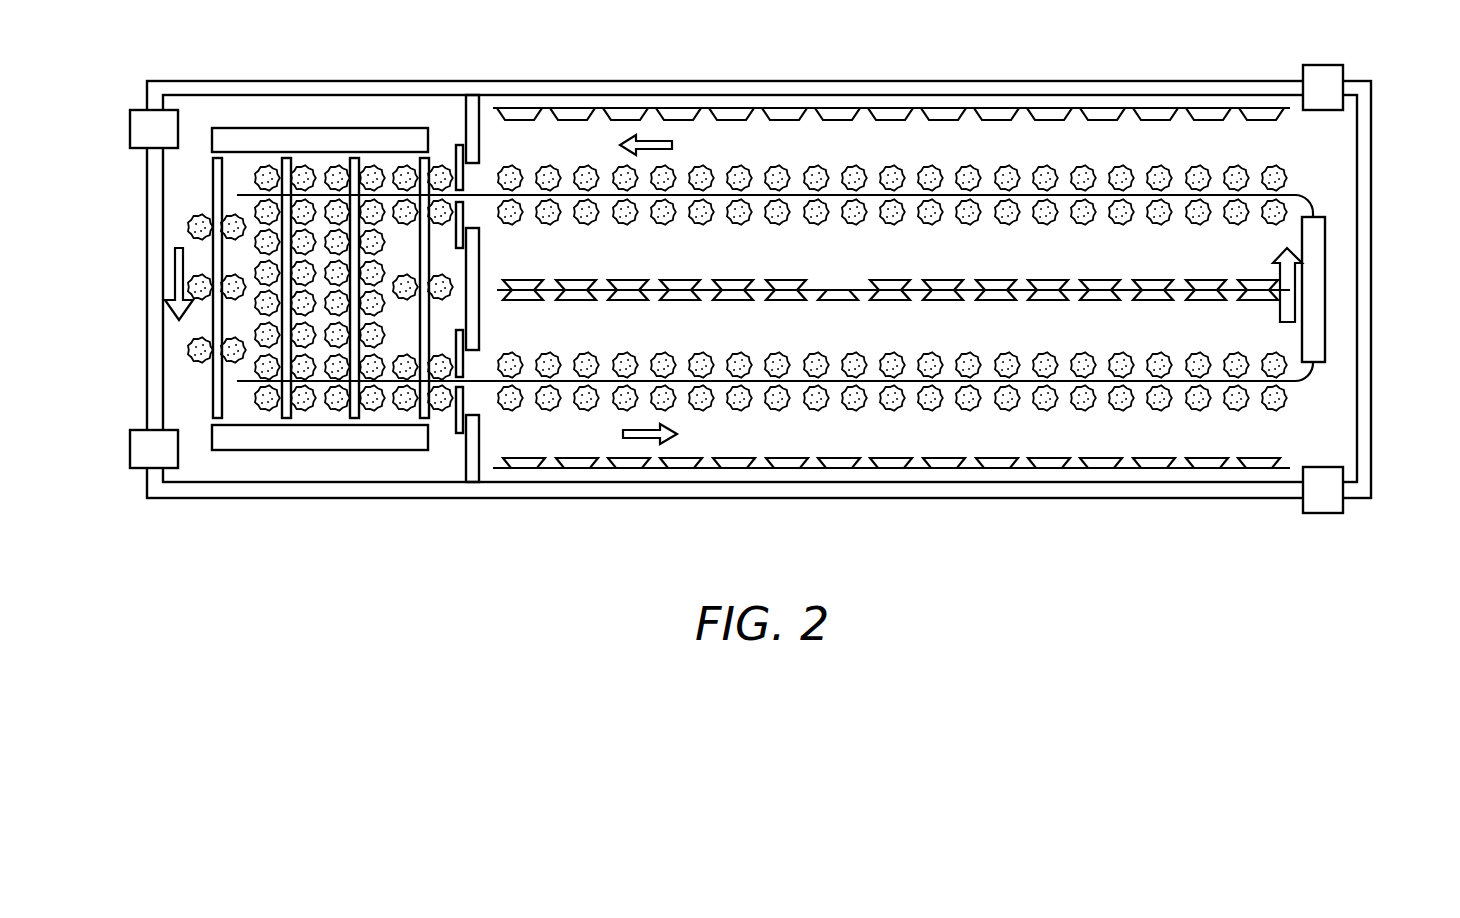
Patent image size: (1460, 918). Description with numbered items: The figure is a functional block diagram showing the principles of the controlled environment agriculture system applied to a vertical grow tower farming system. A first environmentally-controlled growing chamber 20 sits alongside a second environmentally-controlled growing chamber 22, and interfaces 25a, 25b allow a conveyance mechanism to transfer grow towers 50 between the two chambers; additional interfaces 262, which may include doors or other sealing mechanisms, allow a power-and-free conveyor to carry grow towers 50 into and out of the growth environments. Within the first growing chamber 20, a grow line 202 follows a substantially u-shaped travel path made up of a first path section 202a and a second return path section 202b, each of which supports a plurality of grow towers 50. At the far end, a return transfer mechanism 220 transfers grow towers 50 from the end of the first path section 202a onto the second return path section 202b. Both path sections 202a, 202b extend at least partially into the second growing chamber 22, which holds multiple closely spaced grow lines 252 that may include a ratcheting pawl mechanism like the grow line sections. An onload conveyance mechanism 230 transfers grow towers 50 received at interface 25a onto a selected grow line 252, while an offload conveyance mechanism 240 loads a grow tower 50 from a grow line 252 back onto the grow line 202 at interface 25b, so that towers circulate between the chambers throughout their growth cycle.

The first environmentally-controlled growing chamber 20 is at (990, 503).
The second environmentally-controlled growing chamber 22 is at (288, 500).
The interfaces 262 is at (134, 128).
The onload conveyance mechanism 230 is at (343, 140).
The offload conveyance mechanism 240 is at (376, 440).
The grow lines 252 is at (302, 170).
The interface 25a is at (477, 178).
The interface 25b is at (478, 398).
The grow line 202 is at (1312, 192).
The first path section 202a is at (838, 383).
The second return path section 202b is at (838, 192).
The return transfer mechanism 220 is at (1313, 288).
The grow towers 50 is at (1283, 398).